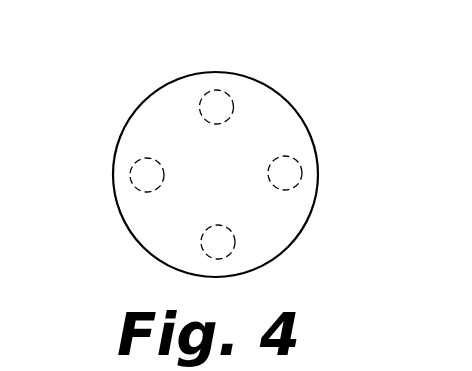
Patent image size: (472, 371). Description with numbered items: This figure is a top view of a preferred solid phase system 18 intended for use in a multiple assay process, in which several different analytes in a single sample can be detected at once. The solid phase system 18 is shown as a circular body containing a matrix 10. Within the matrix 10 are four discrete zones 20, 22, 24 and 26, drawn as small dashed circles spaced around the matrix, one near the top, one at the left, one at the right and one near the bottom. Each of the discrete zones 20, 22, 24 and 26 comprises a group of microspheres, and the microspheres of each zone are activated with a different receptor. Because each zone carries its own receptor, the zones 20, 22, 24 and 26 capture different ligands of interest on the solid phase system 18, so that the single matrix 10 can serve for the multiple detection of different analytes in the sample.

The matrix 10 is at (252, 133).
The solid phase system 18 is at (326, 124).
The discrete zone 20 is at (218, 242).
The discrete zone 22 is at (148, 175).
The discrete zone 24 is at (217, 106).
The discrete zone 26 is at (285, 173).